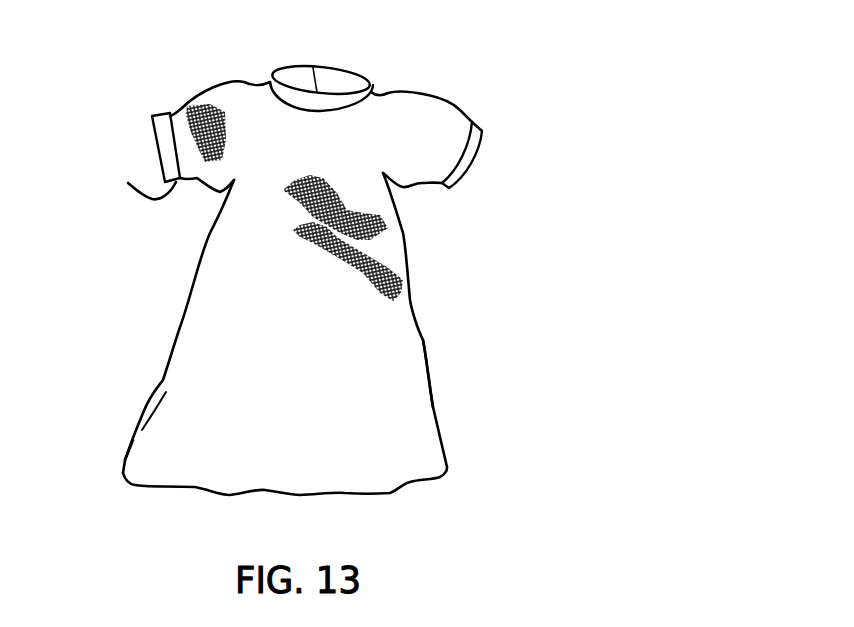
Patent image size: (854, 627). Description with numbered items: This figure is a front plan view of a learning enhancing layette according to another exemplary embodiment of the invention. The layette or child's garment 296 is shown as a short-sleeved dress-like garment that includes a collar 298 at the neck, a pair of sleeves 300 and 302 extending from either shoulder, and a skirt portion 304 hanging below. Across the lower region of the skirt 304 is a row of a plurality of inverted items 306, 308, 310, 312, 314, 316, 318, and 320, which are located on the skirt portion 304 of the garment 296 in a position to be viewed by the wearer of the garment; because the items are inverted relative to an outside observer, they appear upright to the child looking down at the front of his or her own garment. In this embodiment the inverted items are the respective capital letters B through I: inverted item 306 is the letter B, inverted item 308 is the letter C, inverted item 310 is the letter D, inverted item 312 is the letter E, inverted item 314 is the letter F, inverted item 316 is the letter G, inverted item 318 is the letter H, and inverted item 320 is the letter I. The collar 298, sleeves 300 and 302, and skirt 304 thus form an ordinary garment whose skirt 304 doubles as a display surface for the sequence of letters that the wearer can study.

The layette or child's garment 296 is at (383, 69).
The collar 298 is at (332, 67).
The sleeve 300 is at (470, 122).
The sleeve 302 is at (137, 183).
The skirt portion 304 is at (413, 296).
The inverted item 306 is at (428, 386).
The inverted item 308 is at (398, 439).
The inverted item 310 is at (340, 418).
The inverted item 312 is at (313, 455).
The inverted item 314 is at (303, 380).
The inverted item 316 is at (220, 453).
The inverted item 318 is at (228, 380).
The inverted item 320 is at (126, 455).